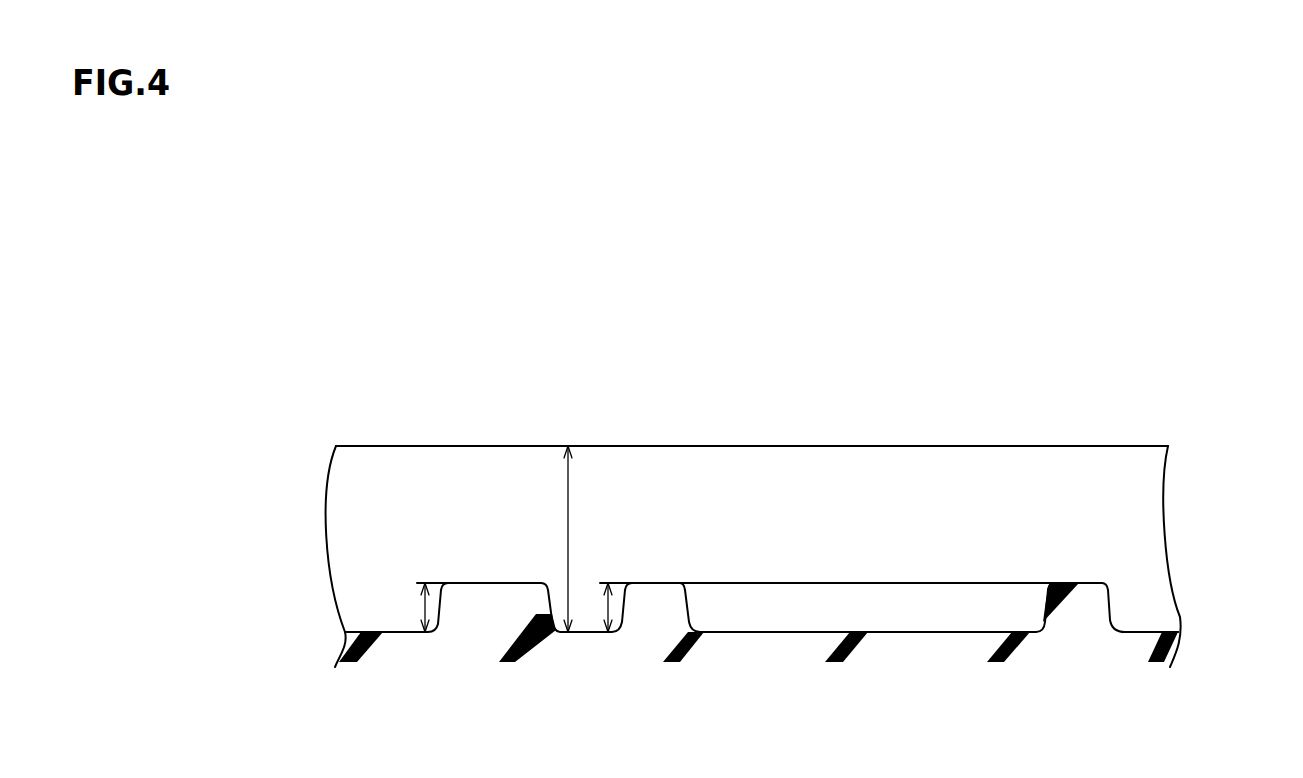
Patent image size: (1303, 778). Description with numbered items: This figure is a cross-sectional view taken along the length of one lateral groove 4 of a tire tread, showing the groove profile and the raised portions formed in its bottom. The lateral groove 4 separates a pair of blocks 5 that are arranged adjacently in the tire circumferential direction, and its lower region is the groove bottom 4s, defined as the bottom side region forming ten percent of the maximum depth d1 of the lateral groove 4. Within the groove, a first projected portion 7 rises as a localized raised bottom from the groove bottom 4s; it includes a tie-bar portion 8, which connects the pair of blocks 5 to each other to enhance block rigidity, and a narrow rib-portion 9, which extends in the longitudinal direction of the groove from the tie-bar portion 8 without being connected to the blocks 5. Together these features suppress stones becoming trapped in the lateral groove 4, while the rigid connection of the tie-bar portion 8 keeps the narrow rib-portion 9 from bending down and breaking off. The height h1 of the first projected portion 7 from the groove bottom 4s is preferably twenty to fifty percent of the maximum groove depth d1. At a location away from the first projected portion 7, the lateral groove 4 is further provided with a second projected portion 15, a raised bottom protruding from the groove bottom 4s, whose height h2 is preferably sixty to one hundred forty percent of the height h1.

The lateral groove 4 is at (1105, 488).
The groove bottom 4s is at (1142, 632).
The blocks 5 is at (1060, 446).
The first projected portion 7 is at (980, 343).
The tie-bar portion 8 is at (657, 577).
The narrow rib-portion 9 is at (867, 577).
The second projected portion 15 is at (487, 575).
The maximum depth d1 is at (565, 507).
The height of the first projected portion h1 is at (606, 609).
The height of the second projected portion h2 is at (423, 608).